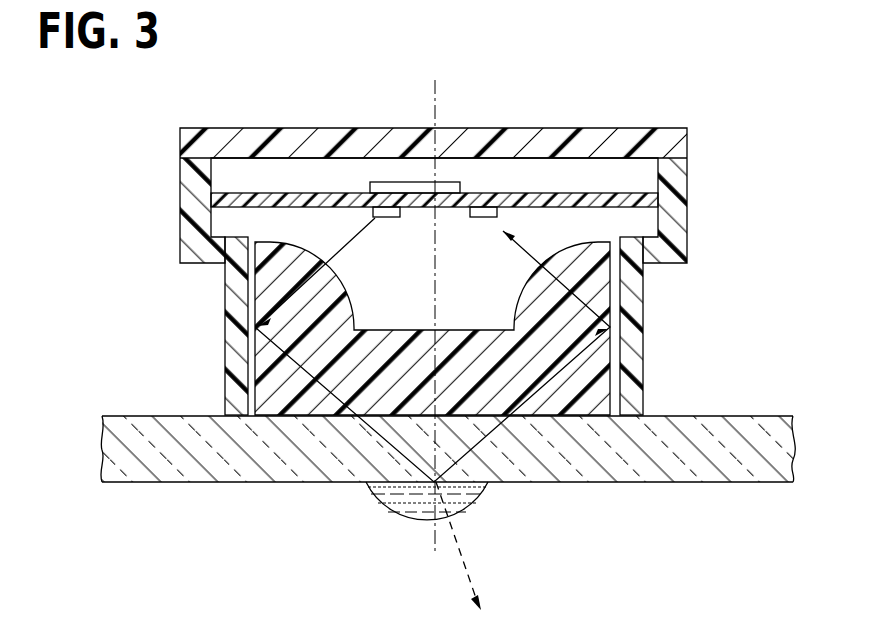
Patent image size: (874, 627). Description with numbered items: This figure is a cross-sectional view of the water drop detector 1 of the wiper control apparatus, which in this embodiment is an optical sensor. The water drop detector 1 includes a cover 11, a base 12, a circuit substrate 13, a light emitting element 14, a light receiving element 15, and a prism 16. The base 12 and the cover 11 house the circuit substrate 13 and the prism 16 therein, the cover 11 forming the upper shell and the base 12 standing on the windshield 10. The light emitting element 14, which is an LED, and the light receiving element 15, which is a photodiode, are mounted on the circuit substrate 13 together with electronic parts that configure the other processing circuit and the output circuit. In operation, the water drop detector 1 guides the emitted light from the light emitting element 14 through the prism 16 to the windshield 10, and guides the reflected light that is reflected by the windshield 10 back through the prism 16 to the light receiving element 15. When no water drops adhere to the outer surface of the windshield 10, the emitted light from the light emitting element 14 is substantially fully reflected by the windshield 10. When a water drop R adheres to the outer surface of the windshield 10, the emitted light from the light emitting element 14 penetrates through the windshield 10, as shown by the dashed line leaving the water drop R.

The water drop detector 1 is at (156, 116).
The windshield 10 is at (688, 478).
The cover 11 is at (656, 130).
The base 12 is at (643, 325).
The circuit substrate 13 is at (627, 193).
The light emitting element 14 is at (372, 213).
The light receiving element 15 is at (500, 212).
The prism 16 is at (263, 378).
The water drop R is at (383, 513).